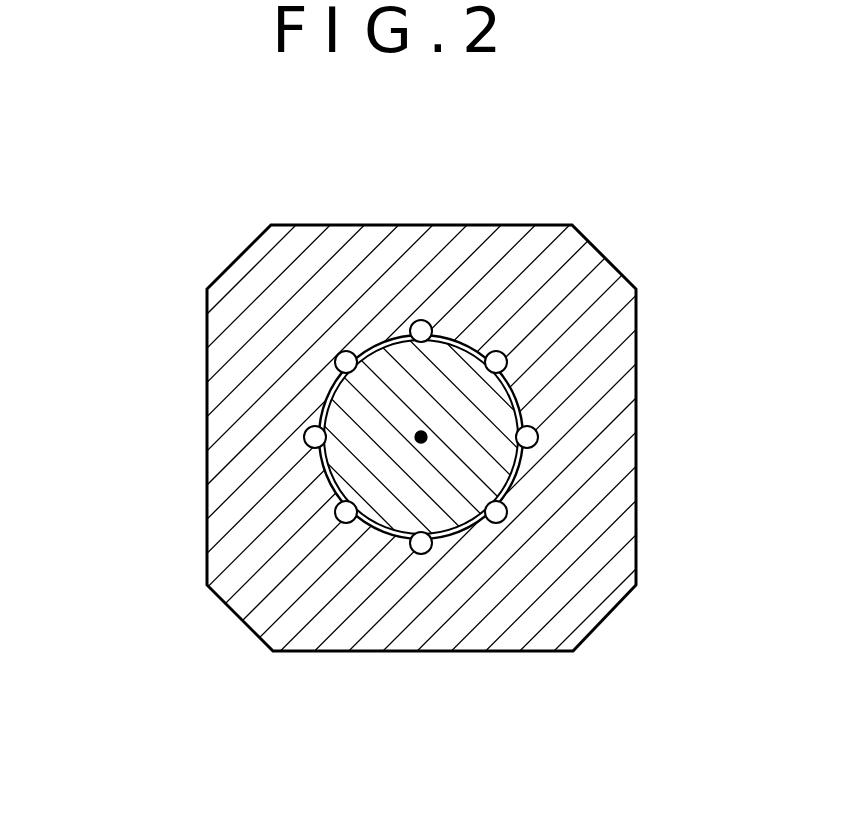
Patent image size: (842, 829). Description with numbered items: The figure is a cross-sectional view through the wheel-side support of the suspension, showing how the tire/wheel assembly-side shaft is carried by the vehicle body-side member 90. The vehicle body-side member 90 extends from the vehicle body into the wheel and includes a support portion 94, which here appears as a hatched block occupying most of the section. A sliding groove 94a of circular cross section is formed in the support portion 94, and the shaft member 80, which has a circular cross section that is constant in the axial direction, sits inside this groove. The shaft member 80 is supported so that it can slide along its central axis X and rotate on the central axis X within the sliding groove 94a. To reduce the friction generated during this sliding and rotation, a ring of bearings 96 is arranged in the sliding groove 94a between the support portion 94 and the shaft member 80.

The vehicle body-side member 90 is at (421, 433).
The support portion 94 is at (603, 380).
The sliding groove 94a is at (376, 346).
The shaft member 80 is at (370, 482).
The bearings 96 is at (496, 512).
The central axis X is at (423, 442).